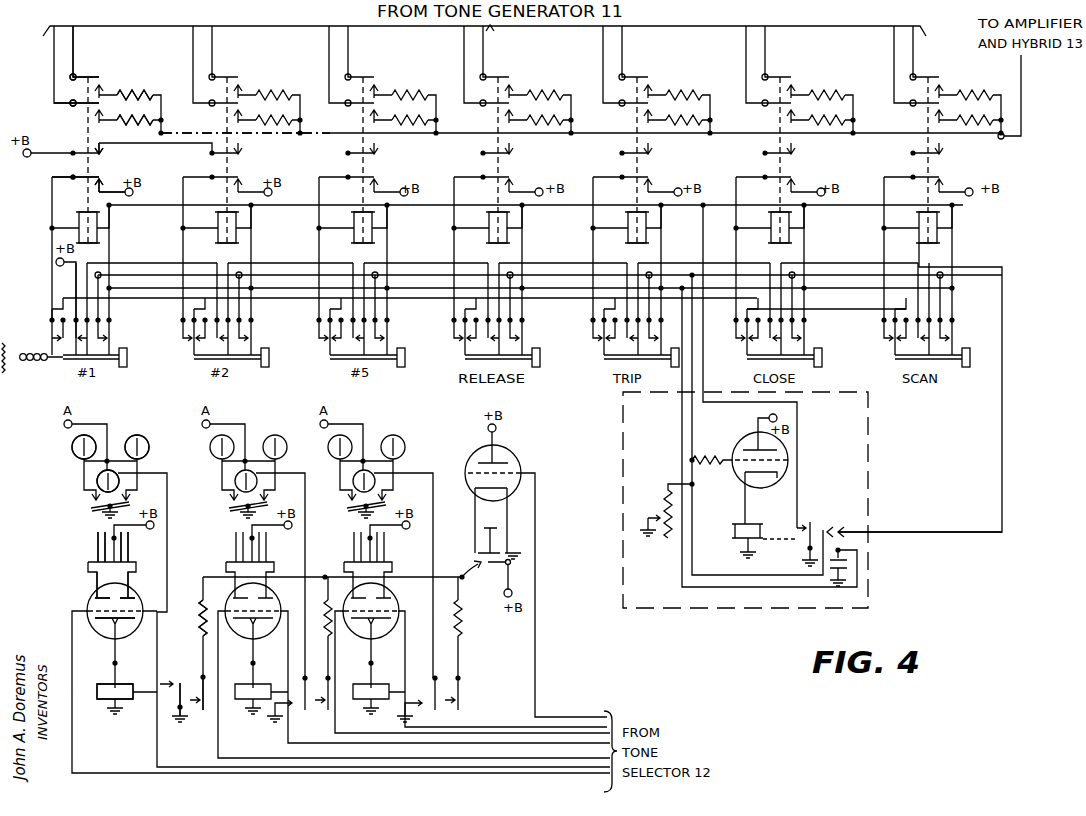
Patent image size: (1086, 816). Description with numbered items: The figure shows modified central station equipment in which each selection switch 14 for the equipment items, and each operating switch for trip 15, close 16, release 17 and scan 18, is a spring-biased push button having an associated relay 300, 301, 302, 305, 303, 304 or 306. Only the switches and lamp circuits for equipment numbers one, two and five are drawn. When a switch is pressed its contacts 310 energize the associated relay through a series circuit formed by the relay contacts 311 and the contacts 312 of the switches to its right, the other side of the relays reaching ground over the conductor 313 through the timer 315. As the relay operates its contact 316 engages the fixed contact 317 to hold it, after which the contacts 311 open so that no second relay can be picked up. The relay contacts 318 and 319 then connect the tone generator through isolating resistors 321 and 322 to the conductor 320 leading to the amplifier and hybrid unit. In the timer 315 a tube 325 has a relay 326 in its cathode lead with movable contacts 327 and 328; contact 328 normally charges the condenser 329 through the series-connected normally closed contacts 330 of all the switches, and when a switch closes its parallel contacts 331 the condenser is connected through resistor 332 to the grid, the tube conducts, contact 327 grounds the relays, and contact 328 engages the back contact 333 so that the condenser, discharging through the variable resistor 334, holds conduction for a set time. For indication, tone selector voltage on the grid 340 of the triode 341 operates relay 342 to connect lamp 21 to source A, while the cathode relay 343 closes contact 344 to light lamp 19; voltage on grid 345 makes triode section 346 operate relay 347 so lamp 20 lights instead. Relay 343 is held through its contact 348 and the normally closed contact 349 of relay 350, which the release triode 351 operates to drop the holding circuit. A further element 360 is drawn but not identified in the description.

The switch 14 is at (173, 357).
The trip switch 15 is at (634, 286).
The close switch 16 is at (858, 356).
The release switch 17 is at (506, 288).
The scan switch 18 is at (932, 288).
The indicating lamp 19 is at (97, 485).
The indicating lamp 20 is at (76, 442).
The indicating lamp 21 is at (144, 440).
The relay 300 is at (99, 238).
The relay 301 is at (236, 238).
The relay 302 is at (372, 238).
The relay 303 is at (646, 238).
The relay 304 is at (789, 238).
The relay 305 is at (507, 238).
The relay 306 is at (937, 238).
The switch contacts 310 is at (58, 330).
The relay contacts 311 is at (82, 150).
The switch contacts 312 is at (214, 338).
The conductor 313 is at (170, 206).
The timer 315 is at (858, 488).
The relay contact 316 is at (92, 178).
The fixed contact 317 is at (97, 193).
The relay contact 318 is at (84, 78).
The relay contact 319 is at (80, 106).
The conductor 320 is at (212, 132).
The resistor 321 is at (846, 88).
The resistor 322 is at (152, 118).
The tube 325 is at (782, 456).
The relay 326 is at (740, 528).
The movable contact 327 is at (802, 545).
The movable contact 328 is at (838, 528).
The condenser 329 is at (852, 566).
The normally closed contacts 330 is at (56, 340).
The switch contacts 331 is at (105, 330).
The resistor 332 is at (724, 456).
The back contact 333 is at (812, 520).
The variable resistor 334 is at (660, 502).
The grid 340 is at (86, 610).
The triode 341 is at (106, 628).
The relay 342 is at (96, 548).
The relay 343 is at (105, 680).
The contact 344 is at (185, 683).
The grid 345 is at (160, 612).
The triode section 346 is at (126, 594).
The relay 347 is at (116, 556).
The contact 348 is at (205, 685).
The contact 349 is at (357, 641).
The relay 350 is at (494, 530).
The triode 351 is at (498, 456).
The plate 360 is at (78, 586).